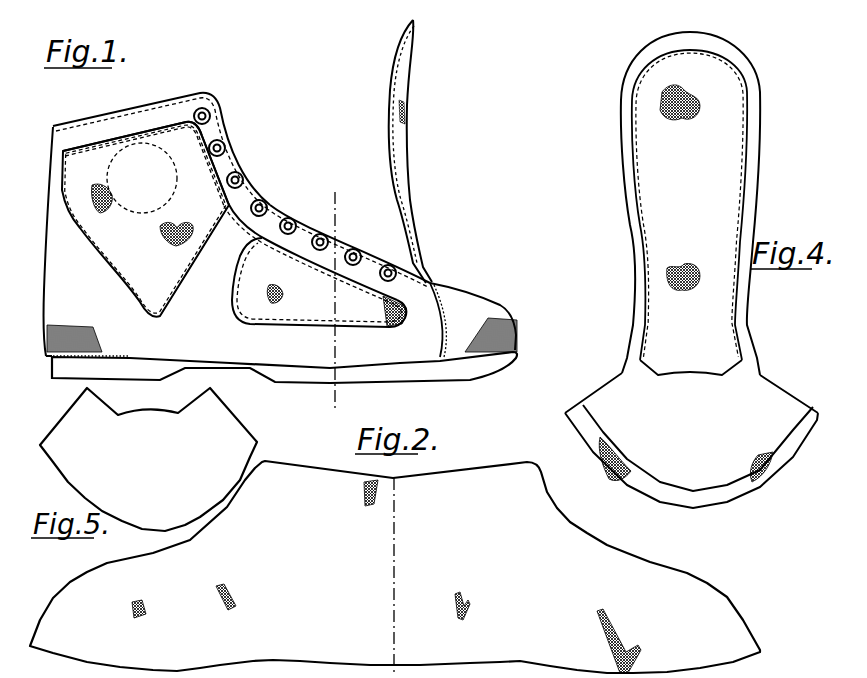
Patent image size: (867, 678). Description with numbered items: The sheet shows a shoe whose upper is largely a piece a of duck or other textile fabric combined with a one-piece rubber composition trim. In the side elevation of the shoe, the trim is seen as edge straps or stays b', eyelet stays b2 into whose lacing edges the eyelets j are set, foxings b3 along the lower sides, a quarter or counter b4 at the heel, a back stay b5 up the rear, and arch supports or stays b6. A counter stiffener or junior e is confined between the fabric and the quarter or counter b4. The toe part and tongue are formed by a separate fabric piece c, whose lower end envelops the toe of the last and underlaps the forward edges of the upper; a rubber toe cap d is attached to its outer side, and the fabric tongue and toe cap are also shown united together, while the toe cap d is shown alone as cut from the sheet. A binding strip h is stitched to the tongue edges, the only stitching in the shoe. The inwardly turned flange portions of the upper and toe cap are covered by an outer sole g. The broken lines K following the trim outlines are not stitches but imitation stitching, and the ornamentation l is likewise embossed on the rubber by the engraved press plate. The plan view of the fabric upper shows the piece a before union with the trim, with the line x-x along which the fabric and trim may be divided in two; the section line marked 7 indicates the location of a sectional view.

In FIG. 1, the edge straps or stays b' is at (161, 143).
In FIG. 1, the eyelet stays b2 is at (273, 212).
In FIG. 1, the foxings b3 is at (300, 338).
In FIG. 1, the quarter or counter b4 is at (55, 302).
In FIG. 1, the back stay b5 is at (58, 168).
In FIG. 1, the arch supports or stays b6 is at (222, 267).
In FIG. 1, the eyelets j is at (243, 172).
In FIG. 1, the binding strip h is at (390, 77).
In FIG. 4, the binding strip h is at (623, 120).
In FIG. 1, the imitation stitching K is at (182, 295).
In FIG. 1, the ornamentation l is at (77, 323).
In FIG. 1, the toe cap d is at (490, 308).
In FIG. 4, the toe cap d is at (622, 380).
In FIG. 5, the toe cap d is at (227, 442).
In FIG. 1, the outer sole g is at (468, 364).
In FIG. 1, the section line 7- 7 is at (332, 301).
In FIG. 4, the separate piece of fabric forming toe part and tongue c is at (650, 187).
In FIG. 2, the piece of duck or other textile fabric a is at (470, 490).
In FIG. 2, the line x- x is at (401, 561).
In FIG. 2, the counter stiffener or junior e is at (784, 669).